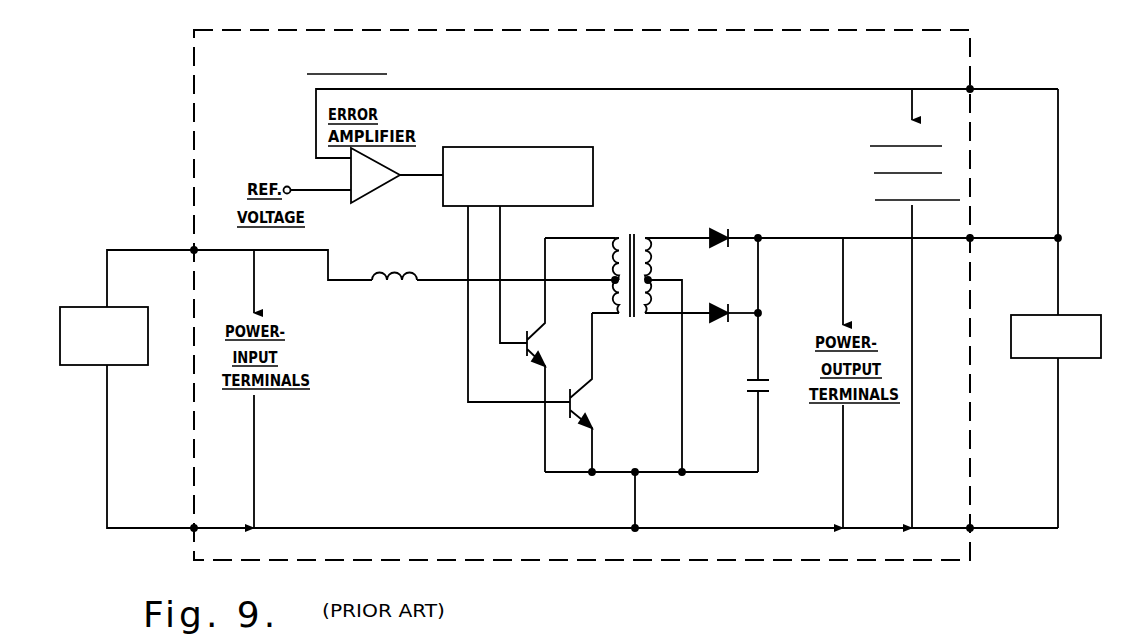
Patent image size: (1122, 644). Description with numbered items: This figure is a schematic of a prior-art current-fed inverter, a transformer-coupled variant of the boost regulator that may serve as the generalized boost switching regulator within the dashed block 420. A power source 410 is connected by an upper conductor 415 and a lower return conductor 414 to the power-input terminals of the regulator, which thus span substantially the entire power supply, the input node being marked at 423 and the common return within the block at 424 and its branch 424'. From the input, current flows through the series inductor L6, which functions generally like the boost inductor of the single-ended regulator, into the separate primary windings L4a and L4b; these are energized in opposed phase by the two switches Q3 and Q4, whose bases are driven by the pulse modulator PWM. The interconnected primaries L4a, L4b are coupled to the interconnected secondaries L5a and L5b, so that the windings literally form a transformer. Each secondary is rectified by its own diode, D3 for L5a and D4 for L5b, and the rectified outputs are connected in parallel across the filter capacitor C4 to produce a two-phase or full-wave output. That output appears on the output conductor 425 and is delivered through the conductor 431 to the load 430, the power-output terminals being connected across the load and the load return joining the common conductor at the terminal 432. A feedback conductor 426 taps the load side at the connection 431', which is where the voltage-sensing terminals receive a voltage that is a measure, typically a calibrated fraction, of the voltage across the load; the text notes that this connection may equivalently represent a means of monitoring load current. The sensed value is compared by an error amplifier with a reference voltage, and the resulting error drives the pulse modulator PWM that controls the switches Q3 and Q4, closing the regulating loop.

The power source 410 is at (73, 367).
The power input return conductor 414 is at (135, 530).
The power input conductor 415 is at (160, 249).
The dashed block 420 is at (452, 560).
The power input terminal 423 is at (218, 253).
The common return conductor 424 is at (509, 512).
The common return branch conductor 424' is at (603, 500).
The power output conductor 425 is at (920, 243).
The feedback conductor 426 is at (712, 88).
The load 430 is at (1083, 360).
The load conductor 431 is at (1083, 276).
The voltage-sensing terminal connection 431' is at (1080, 163).
The load return terminal 432 is at (983, 533).
The pulse modulator PWM is at (597, 161).
The series inductor L6 is at (397, 283).
The switch Q3 is at (536, 360).
The switch Q4 is at (587, 420).
The primary winding L4a is at (619, 238).
The primary winding L4b is at (616, 295).
The secondary winding L5a is at (648, 240).
The secondary winding L5b is at (651, 312).
The rectifier diode D3 is at (884, 251).
The rectifier diode D4 is at (725, 303).
The output filter capacitor C4 is at (766, 355).